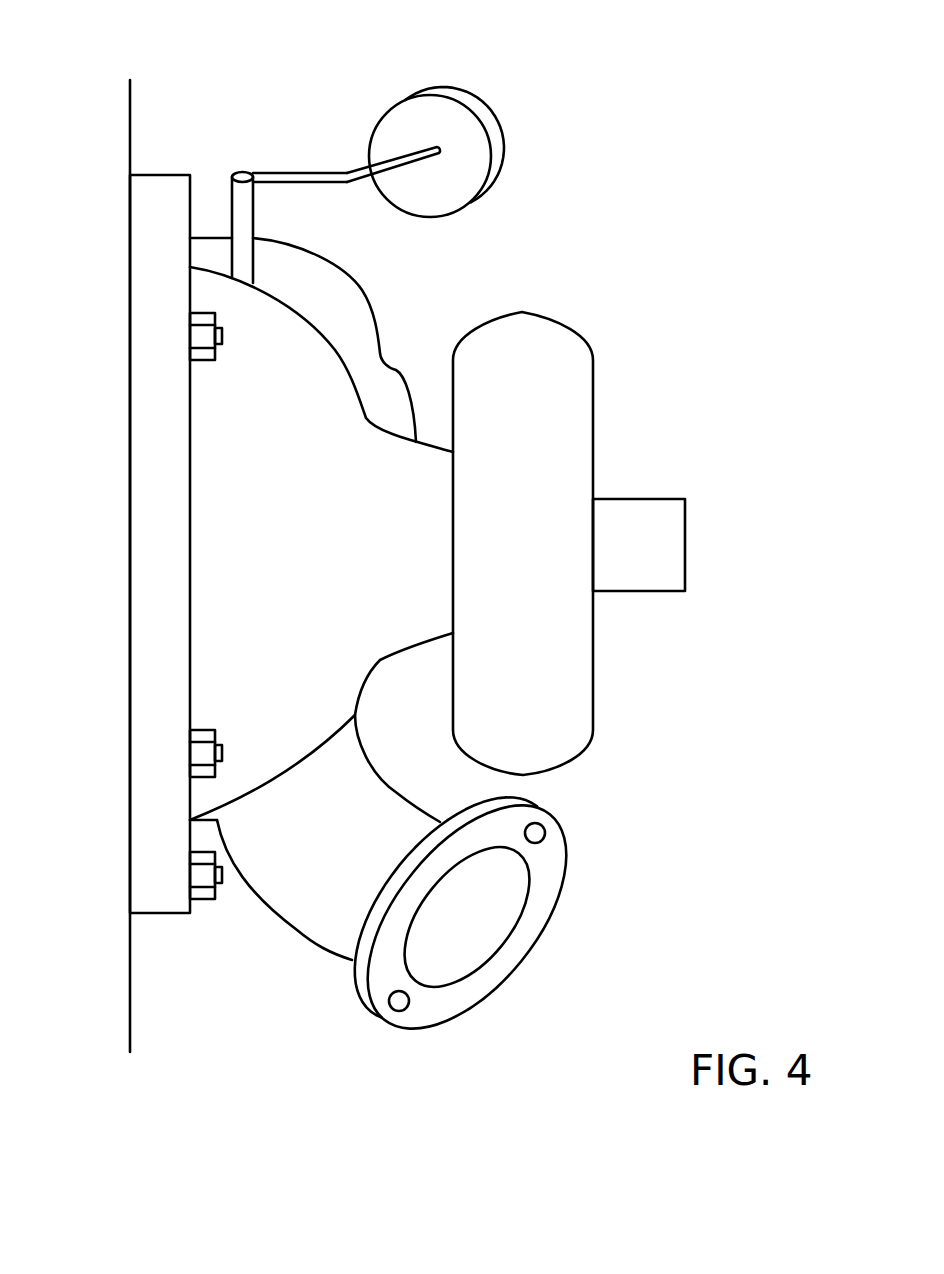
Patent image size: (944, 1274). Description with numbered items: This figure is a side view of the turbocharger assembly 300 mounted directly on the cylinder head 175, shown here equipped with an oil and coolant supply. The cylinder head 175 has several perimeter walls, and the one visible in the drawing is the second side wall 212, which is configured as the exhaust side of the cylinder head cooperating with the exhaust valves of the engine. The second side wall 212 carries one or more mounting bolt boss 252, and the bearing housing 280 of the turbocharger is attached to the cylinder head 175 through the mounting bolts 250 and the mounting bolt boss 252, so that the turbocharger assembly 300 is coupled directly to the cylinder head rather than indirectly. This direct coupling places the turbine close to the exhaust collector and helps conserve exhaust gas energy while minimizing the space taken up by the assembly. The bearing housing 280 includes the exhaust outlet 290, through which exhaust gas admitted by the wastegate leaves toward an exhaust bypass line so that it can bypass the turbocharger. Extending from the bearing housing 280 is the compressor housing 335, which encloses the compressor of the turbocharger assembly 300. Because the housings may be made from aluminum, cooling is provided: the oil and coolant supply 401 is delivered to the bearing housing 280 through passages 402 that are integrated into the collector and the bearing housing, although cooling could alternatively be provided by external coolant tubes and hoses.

The cylinder head 175 is at (68, 113).
The second side wall 212 is at (132, 977).
The mounting bolts 250 is at (225, 760).
The mounting bolt boss 252 is at (190, 617).
The bearing housing 280 is at (350, 538).
The exhaust outlet 290 is at (450, 935).
The turbocharger assembly 300 is at (702, 408).
The compressor housing 335 is at (543, 563).
The oil and coolant supply 401 is at (503, 128).
The passages 402 is at (362, 290).